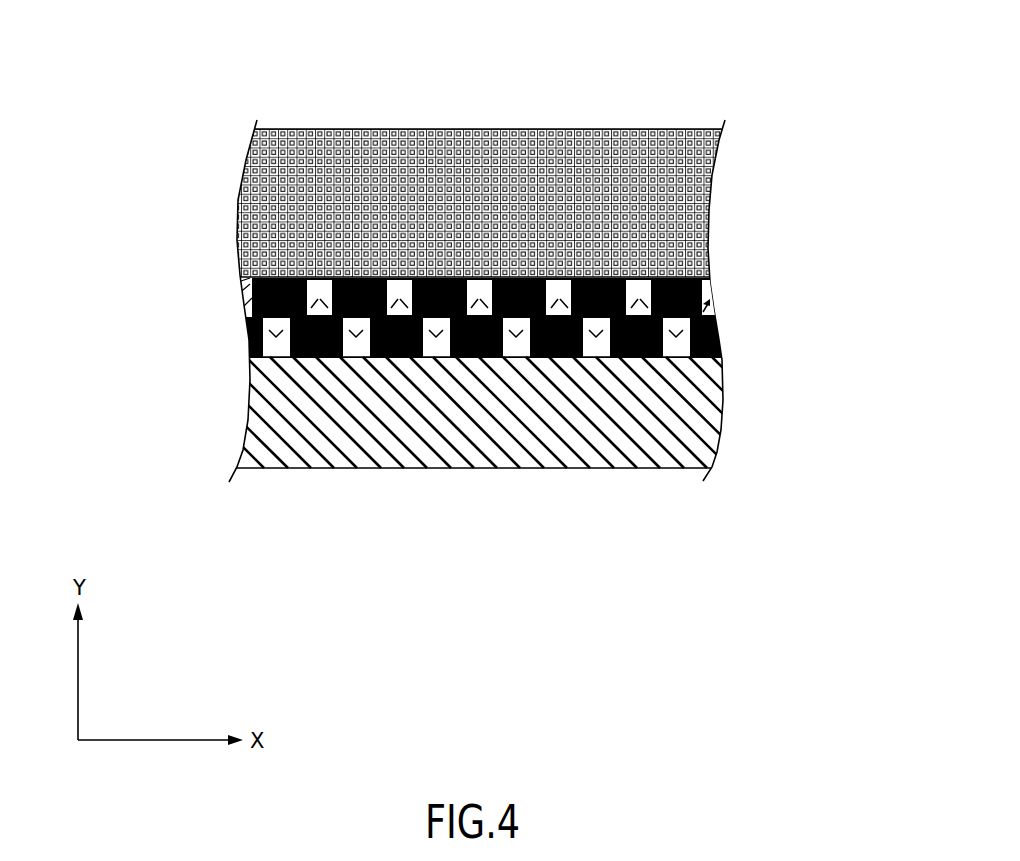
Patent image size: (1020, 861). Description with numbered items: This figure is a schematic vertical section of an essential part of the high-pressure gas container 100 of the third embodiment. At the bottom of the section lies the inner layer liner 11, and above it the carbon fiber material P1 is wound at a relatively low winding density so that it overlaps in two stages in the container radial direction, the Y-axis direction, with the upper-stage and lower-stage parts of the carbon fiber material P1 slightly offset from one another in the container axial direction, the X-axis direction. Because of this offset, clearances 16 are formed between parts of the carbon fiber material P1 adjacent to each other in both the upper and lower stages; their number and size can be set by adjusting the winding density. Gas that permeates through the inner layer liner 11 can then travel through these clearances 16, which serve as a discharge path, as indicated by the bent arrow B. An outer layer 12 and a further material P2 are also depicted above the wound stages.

The high-pressure gas container 100 is at (706, 75).
The second layer 12 is at (254, 161).
The second pitch P2 is at (258, 212).
The carbon fiber material P1 is at (242, 272).
The clearances 16 is at (247, 332).
The inner layer liner 11 is at (249, 439).
The bent arrow B is at (720, 320).